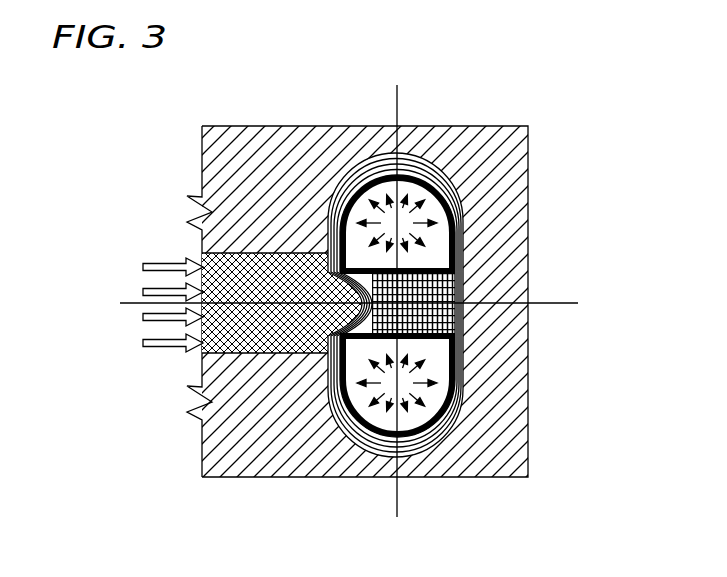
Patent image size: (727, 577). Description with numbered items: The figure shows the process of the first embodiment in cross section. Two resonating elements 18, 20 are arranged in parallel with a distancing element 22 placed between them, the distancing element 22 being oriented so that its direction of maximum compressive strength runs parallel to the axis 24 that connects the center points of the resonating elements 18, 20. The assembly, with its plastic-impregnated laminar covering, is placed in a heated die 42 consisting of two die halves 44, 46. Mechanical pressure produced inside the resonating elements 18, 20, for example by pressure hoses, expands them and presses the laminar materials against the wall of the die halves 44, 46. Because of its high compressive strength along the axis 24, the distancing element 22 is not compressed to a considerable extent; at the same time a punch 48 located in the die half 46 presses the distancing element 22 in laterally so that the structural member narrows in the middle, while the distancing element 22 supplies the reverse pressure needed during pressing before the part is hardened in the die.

The resonating element 18 is at (413, 435).
The resonating element 20 is at (437, 178).
The distancing element 22 is at (437, 318).
The axis 24 is at (397, 105).
The die 42 is at (322, 128).
The die half 44 is at (497, 168).
The die half 46 is at (268, 145).
The punch 48 is at (220, 343).